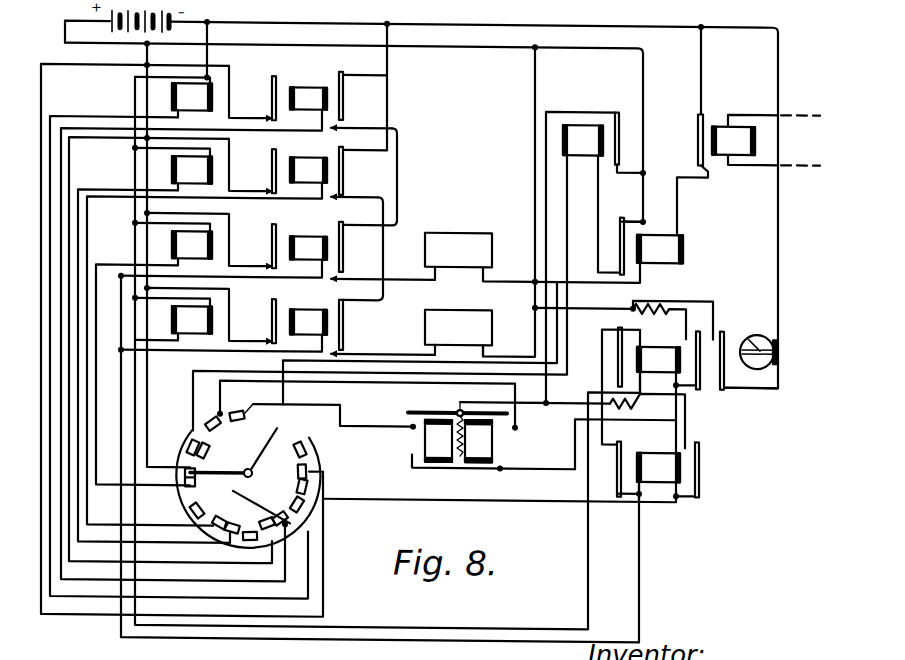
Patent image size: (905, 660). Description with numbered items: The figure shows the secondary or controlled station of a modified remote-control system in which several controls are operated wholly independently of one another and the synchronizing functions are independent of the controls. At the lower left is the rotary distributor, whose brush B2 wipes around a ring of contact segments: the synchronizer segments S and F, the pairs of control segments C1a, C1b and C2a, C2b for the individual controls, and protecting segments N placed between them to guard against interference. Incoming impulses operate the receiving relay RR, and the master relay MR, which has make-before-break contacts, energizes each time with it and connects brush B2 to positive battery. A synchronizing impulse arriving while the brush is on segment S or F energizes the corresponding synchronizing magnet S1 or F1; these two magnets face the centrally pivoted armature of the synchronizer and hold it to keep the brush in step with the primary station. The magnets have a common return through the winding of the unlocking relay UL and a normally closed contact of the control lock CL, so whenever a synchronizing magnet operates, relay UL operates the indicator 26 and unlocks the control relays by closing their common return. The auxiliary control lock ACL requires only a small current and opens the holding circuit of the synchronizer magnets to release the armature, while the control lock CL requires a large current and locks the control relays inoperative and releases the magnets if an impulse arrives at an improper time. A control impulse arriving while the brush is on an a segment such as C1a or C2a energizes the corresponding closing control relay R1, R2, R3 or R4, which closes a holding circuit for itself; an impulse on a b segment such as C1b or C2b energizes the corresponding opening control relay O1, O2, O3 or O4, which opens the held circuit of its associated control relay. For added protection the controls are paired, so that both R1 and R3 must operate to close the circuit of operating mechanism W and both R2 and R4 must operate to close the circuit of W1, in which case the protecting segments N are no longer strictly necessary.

The opening control relay O1 is at (213, 97).
The opening control relay O2 is at (213, 170).
The opening control relay O3 is at (213, 245).
The opening control relay O4 is at (213, 320).
The control relay R1 is at (328, 97).
The control relay R2 is at (328, 168).
The control relay R3 is at (328, 247).
The control relay R4 is at (328, 320).
The operating mechanism W is at (532, 258).
The operating mechanism W1 is at (458, 333).
The auxiliary control lock ACL is at (594, 258).
The receiving relay RR is at (748, 175).
The master relay MR is at (651, 247).
The unlocking relay UL is at (629, 373).
The control lock CL is at (511, 447).
The indicator 26 is at (757, 329).
The synchronizing magnet S1 is at (424, 438).
The synchronizing magnet F1 is at (493, 438).
The brush B2 is at (237, 465).
The contact segment S is at (243, 410).
The contact segment F is at (210, 418).
The protecting segments N is at (300, 444).
The contact segment C1a is at (298, 466).
The contact segment C1b is at (297, 484).
The contact segment C2a is at (238, 481).
The contact segment C2b is at (220, 517).